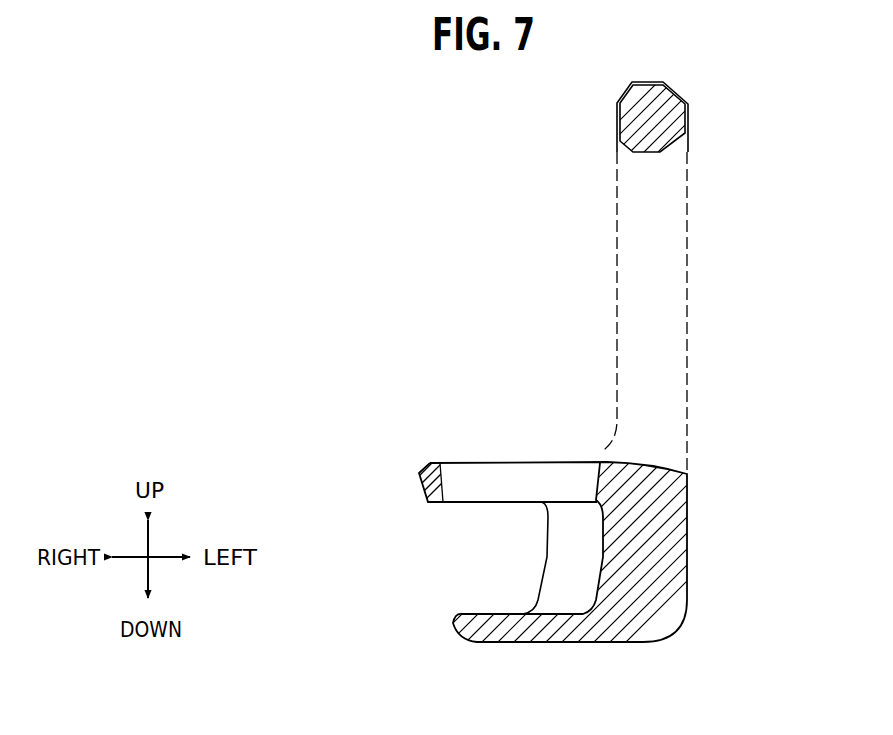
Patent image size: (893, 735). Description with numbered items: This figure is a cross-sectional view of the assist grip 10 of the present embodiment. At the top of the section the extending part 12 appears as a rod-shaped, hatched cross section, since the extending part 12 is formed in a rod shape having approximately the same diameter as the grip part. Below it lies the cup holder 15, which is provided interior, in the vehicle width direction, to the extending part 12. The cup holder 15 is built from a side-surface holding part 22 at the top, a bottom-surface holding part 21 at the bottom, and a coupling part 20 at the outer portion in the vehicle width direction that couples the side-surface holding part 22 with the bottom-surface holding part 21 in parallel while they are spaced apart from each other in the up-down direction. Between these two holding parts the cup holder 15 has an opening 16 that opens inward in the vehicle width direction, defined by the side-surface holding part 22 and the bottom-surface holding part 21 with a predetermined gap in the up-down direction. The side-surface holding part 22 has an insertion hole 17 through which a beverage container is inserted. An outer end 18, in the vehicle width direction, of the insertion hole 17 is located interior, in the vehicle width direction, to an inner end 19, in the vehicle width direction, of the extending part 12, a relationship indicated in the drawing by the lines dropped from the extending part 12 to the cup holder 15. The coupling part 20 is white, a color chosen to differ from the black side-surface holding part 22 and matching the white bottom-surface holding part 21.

The assist grip 10 is at (703, 115).
The extending part 12 is at (667, 81).
The cup holder 15 is at (518, 452).
The opening 16 is at (458, 557).
The insertion hole 17 is at (472, 477).
The outer end 18 is at (595, 481).
The inner end 19 is at (618, 118).
The coupling part 20 is at (680, 563).
The bottom-surface holding part 21 is at (517, 633).
The side-surface holding part 22 is at (422, 480).